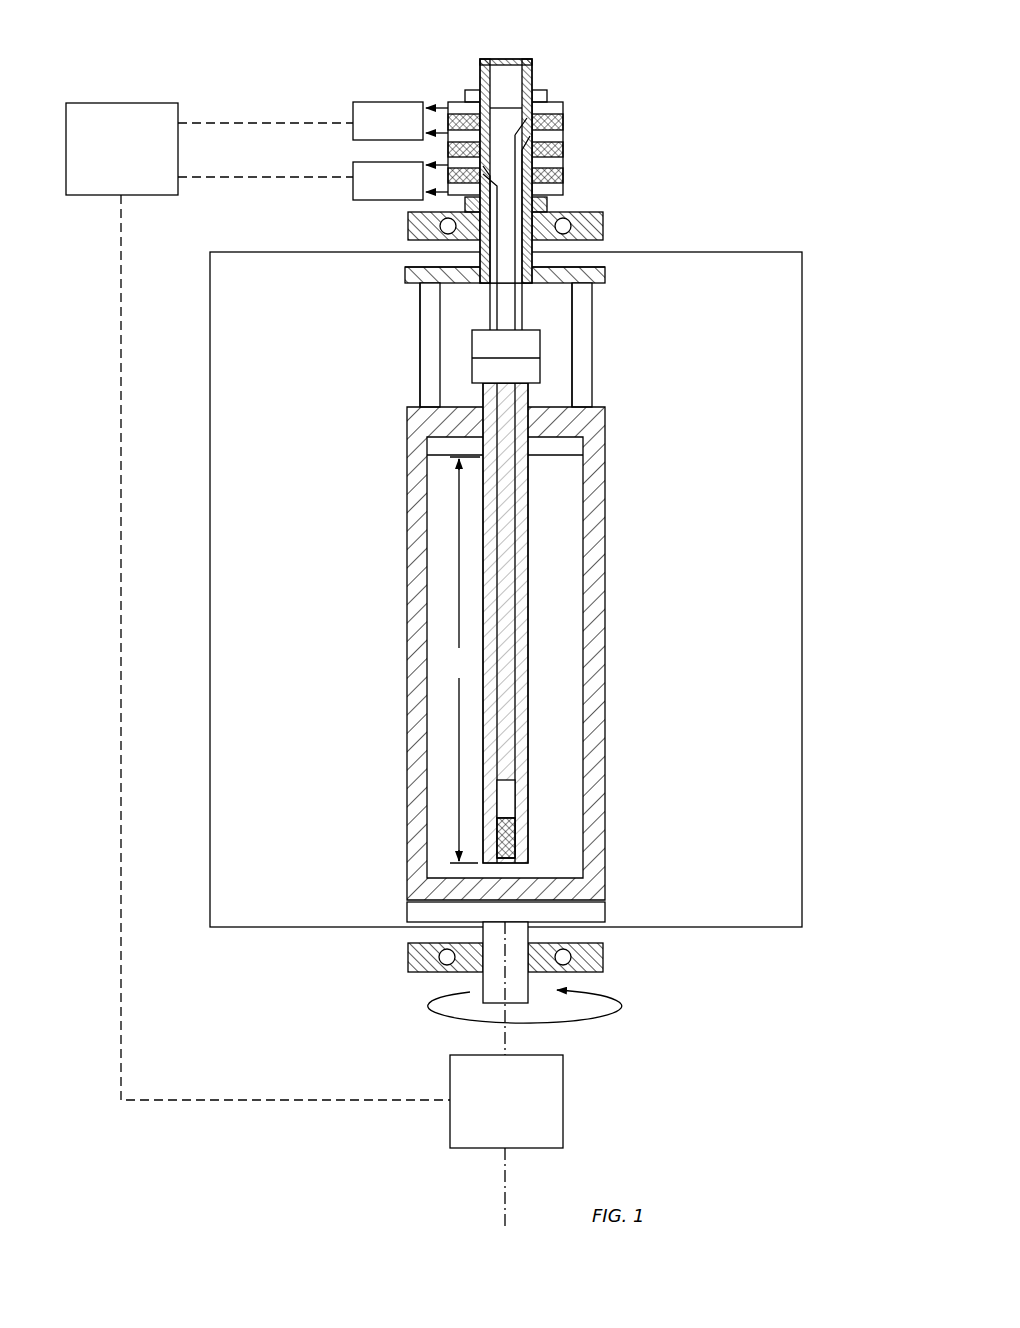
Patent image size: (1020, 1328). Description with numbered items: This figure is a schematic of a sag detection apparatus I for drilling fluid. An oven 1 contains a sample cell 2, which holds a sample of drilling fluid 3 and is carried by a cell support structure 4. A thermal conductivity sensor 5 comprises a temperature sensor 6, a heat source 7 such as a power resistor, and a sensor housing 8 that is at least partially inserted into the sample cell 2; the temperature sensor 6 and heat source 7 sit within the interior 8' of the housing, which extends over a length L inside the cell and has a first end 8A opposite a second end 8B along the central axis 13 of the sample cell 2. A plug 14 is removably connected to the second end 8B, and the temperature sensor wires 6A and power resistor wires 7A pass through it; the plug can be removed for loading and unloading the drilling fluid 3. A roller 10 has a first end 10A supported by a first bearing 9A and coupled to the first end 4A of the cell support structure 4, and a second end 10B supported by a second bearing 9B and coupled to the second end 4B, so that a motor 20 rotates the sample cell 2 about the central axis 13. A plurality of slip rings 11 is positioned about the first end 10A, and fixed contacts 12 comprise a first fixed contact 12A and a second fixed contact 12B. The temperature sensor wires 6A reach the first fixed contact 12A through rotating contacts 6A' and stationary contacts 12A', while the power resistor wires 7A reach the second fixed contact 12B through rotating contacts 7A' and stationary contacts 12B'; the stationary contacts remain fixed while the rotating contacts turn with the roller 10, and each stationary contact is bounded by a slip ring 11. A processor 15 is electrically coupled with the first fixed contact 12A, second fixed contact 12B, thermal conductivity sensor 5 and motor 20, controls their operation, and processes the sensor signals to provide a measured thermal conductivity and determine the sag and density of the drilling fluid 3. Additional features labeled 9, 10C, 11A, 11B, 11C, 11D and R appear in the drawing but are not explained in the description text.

The apparatus I is at (252, 45).
The oven 1 is at (745, 250).
The sample cell 2 is at (605, 518).
The drilling fluid 3 is at (557, 623).
The cell support structure 4 is at (403, 349).
The first end of the cell support structure 4A is at (428, 305).
The second end of the cell support structure 4B is at (418, 913).
The thermal conductivity sensor 5 is at (531, 550).
The temperature sensor 6 is at (521, 836).
The temperature sensor wires 6A is at (470, 248).
The rotating contacts 6A' is at (394, 234).
The heat source 7 is at (523, 793).
The power resistor wires 7A is at (541, 224).
The rotating contacts 7A' is at (608, 90).
The sensor housing 8 is at (470, 458).
The first end of the sensor housing 8A is at (520, 395).
The second end of the sensor housing 8B is at (522, 855).
The interior of the sensor housing 8' is at (422, 763).
The support posts 9 is at (416, 379).
The first bearing 9A is at (606, 224).
The second bearing 9B is at (608, 955).
The roller 10 is at (512, 88).
The first end of the roller 10A is at (533, 72).
The second end of the roller 10B is at (503, 997).
The shaft bore 10C is at (500, 155).
The slip rings 11 is at (448, 146).
The first slip ring 11A is at (563, 123).
The second slip ring 11B is at (563, 148).
The third slip ring 11C is at (563, 177).
The slip ring support 11D is at (547, 203).
The fixed contacts 12 is at (343, 133).
The first fixed contact 12A is at (388, 181).
The stationary contacts of the first fixed contact 12A' is at (390, 196).
The second fixed contact 12B is at (388, 121).
The stationary contacts of the second fixed contact 12B' is at (435, 90).
The central axis 13 is at (505, 1040).
The plug 14 is at (549, 348).
The processor 15 is at (122, 149).
The motor 20 is at (506, 1101).
The length L is at (465, 660).
The rotation direction R is at (600, 1010).